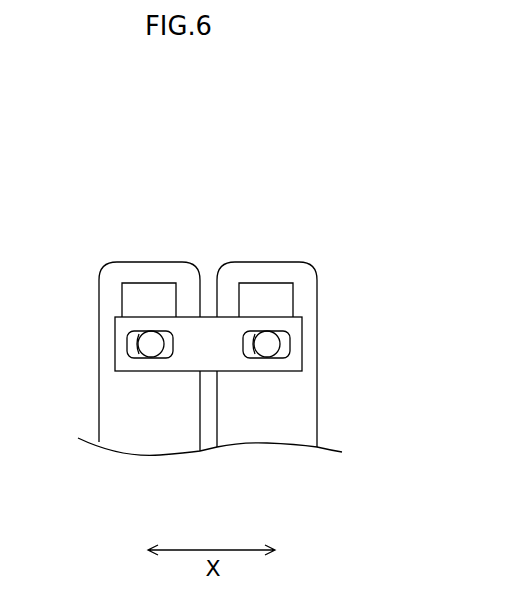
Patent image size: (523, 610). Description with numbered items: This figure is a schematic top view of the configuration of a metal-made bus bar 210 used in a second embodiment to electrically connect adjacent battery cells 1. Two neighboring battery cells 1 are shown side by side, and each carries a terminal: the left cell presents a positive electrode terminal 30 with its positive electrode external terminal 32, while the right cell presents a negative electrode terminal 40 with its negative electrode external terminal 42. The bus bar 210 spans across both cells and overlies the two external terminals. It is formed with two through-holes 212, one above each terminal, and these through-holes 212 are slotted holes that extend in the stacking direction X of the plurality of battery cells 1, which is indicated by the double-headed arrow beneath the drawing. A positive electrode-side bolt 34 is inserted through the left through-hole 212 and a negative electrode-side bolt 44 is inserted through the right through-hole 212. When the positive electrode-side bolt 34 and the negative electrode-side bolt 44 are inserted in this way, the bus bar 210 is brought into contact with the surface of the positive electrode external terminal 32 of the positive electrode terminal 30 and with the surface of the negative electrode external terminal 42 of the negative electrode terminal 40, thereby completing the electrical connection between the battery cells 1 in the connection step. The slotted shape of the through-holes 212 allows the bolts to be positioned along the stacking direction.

The battery cell 1 is at (170, 260).
The positive electrode terminal 30 is at (140, 249).
The positive electrode external terminal 32 is at (128, 288).
The negative electrode terminal 40 is at (266, 252).
The negative electrode external terminal 42 is at (250, 290).
The bus bar 210 is at (209, 327).
The through-hole 212 is at (127, 334).
The positive electrode-side bolt 34 is at (140, 345).
The negative electrode-side bolt 44 is at (278, 345).